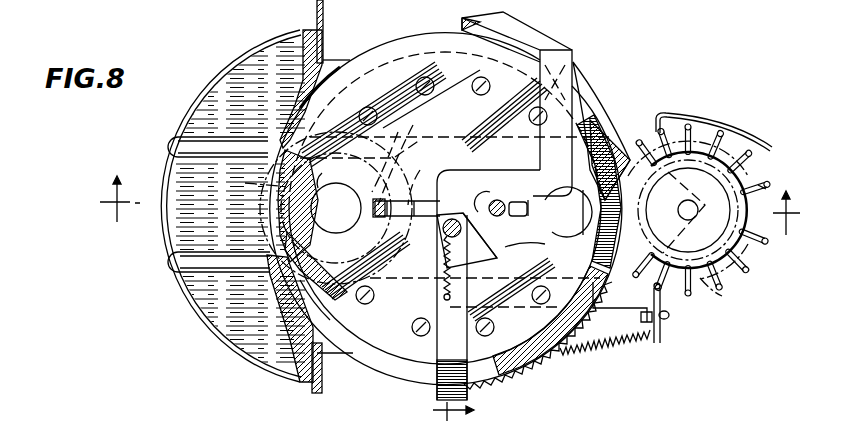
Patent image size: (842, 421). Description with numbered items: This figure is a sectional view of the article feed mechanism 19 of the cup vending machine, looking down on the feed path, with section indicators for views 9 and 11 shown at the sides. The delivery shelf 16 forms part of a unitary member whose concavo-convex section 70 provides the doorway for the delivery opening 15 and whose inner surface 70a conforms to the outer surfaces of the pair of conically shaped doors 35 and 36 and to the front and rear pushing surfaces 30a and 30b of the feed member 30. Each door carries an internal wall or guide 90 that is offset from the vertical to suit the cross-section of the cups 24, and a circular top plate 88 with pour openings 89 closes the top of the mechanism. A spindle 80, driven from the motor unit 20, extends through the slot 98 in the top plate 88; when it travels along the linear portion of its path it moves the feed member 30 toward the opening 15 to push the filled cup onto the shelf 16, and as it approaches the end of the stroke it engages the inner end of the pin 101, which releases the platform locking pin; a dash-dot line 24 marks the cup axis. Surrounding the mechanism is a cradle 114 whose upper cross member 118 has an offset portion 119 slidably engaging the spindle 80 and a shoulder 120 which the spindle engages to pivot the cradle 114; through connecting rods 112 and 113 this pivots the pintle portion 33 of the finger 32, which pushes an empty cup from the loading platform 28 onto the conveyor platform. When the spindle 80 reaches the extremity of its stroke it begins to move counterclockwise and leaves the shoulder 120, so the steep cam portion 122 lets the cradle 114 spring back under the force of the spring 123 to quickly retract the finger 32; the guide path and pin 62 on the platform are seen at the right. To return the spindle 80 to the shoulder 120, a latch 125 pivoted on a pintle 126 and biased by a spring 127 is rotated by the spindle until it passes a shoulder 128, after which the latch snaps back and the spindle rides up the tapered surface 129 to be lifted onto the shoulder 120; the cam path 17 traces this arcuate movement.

The section line 9- 9 is at (450, 205).
The section line 11- 11 is at (453, 411).
The delivery opening 15 is at (285, 250).
The delivery shelf 16 is at (172, 172).
The cam track 17 is at (414, 148).
The article feed mechanism 19 is at (446, 35).
The motor unit 20 is at (393, 194).
The cup 24 is at (490, 236).
The cup loading platform 28 is at (730, 160).
The feed member 30 is at (460, 140).
The front cup pushing surface 30a is at (423, 114).
The rear cup pushing surface 30b is at (447, 276).
The finger 32 is at (745, 138).
The pintle portion 33 is at (669, 322).
The door 35 is at (396, 45).
The door 36 is at (392, 362).
The pin 62 is at (755, 185).
The concavo-convex section 70 is at (221, 80).
The inner surface 70a is at (302, 112).
The spindle 80 is at (505, 202).
The top plate 88 is at (388, 325).
The opening 89 is at (454, 211).
The internal wall or guide 90 is at (385, 291).
The slot 98 is at (422, 187).
The pin 101 is at (336, 208).
The connecting rod 112 is at (663, 310).
The connecting rod 113 is at (630, 315).
The cradle 114 is at (575, 62).
The upper cross member 118 is at (578, 105).
The offset portion 119 is at (511, 177).
The shoulder 120 is at (495, 200).
The steep cam portion 122 is at (472, 202).
The spring 123 is at (600, 350).
The latch 125 is at (484, 254).
The pintle 126 is at (443, 230).
The spring 127 is at (455, 285).
The shoulder 128 is at (500, 222).
The tapered surface 129 is at (525, 245).